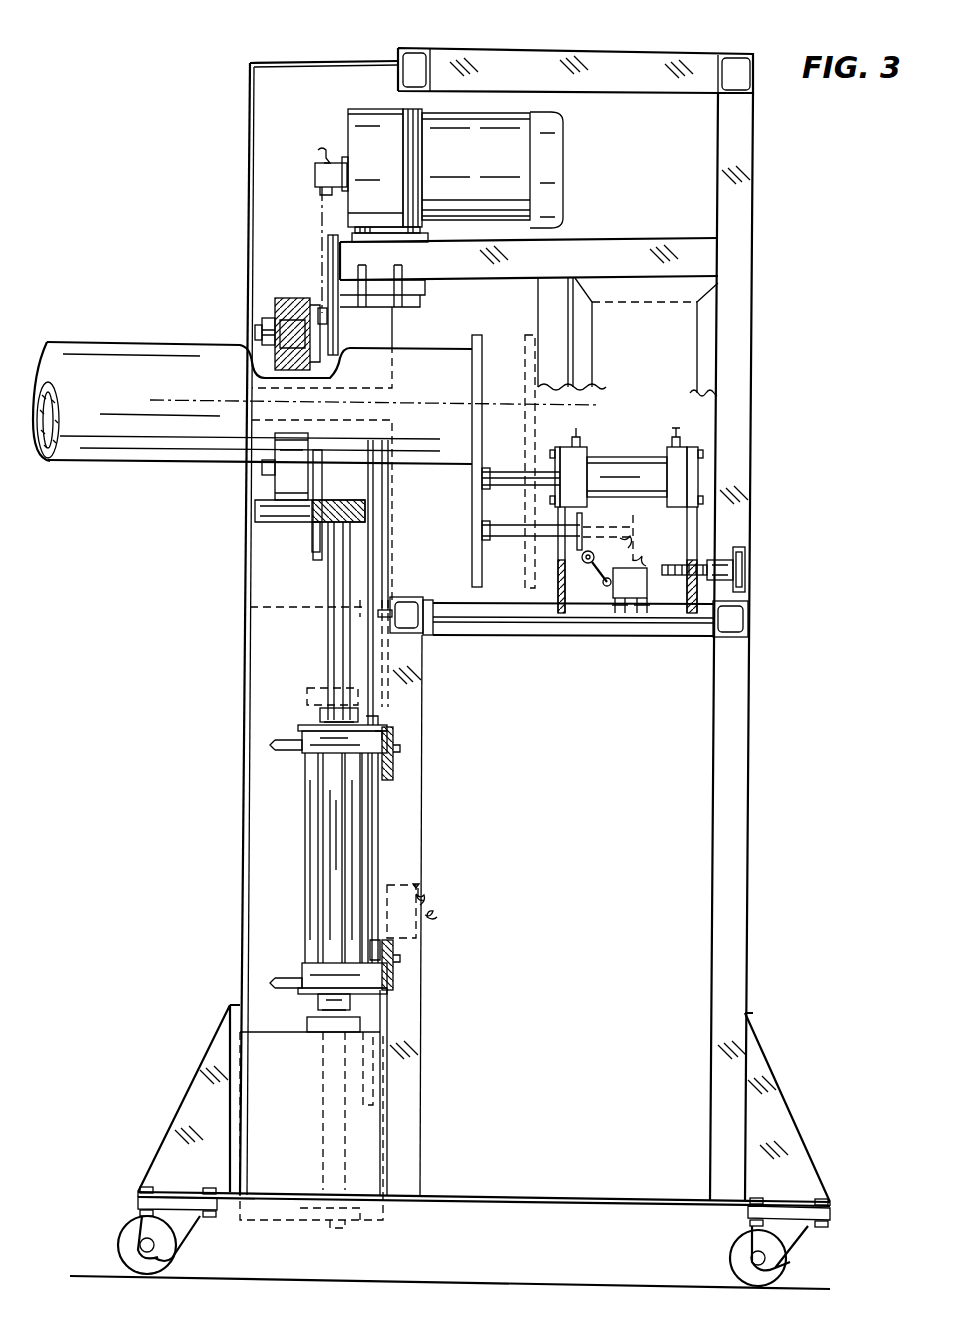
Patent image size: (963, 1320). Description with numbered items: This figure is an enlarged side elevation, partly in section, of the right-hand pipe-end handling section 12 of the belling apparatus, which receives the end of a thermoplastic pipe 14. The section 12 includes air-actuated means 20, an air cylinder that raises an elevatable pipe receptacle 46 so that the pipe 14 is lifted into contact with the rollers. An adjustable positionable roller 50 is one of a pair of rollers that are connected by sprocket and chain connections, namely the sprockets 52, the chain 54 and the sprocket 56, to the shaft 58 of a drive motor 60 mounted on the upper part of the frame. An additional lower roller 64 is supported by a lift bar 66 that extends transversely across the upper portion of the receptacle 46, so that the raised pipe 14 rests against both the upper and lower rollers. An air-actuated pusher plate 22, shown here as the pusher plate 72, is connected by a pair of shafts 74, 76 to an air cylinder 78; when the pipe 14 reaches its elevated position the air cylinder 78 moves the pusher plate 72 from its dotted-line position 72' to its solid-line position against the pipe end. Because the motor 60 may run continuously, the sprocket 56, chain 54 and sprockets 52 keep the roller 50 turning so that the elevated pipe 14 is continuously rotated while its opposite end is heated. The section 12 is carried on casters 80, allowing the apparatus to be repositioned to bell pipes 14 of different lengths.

The right-hand pipe-end handling section 12 is at (522, 106).
The pipe 14 is at (136, 340).
The air-actuated means 20 is at (358, 827).
The air-actuated pusher plate 22 is at (455, 339).
The elevatable pipe receptacle 46 is at (330, 648).
The adjustable positionable roller 50 is at (275, 365).
The sprocket 52 is at (312, 329).
The chain 54 is at (318, 208).
The sprocket 56 is at (320, 150).
The shaft 58 is at (347, 176).
The drive motor 60 is at (553, 165).
The adjustable positionable roller 64 is at (278, 482).
The lift bar 66 is at (312, 540).
The air-actuated pusher plate 72 is at (497, 445).
The dotted line position of pusher plate 72' is at (564, 461).
The shaft 74 is at (500, 468).
The shaft 76 is at (500, 526).
The air cylinder 78 is at (636, 460).
The casters 80 is at (172, 1260).